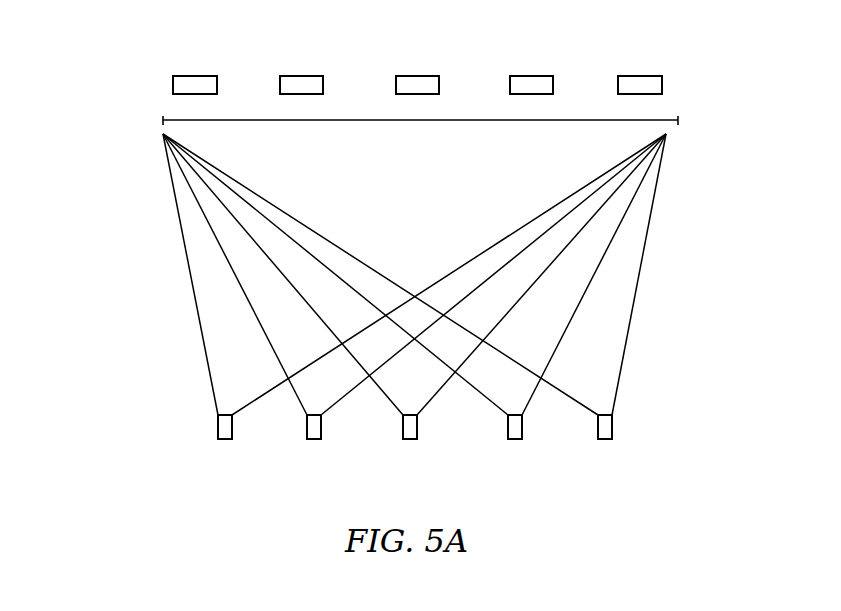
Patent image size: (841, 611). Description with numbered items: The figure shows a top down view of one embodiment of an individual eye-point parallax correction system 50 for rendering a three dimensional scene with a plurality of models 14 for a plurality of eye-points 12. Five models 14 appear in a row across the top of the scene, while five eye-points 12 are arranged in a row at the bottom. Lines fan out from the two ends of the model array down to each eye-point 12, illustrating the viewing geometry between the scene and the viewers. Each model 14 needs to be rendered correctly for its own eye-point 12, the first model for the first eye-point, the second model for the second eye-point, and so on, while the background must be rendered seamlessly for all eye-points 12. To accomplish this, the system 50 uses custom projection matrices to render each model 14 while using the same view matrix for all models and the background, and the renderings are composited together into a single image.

The models 14 is at (662, 85).
The eye-points 12 is at (612, 427).
The acoustic beam paths / system 50 is at (148, 306).